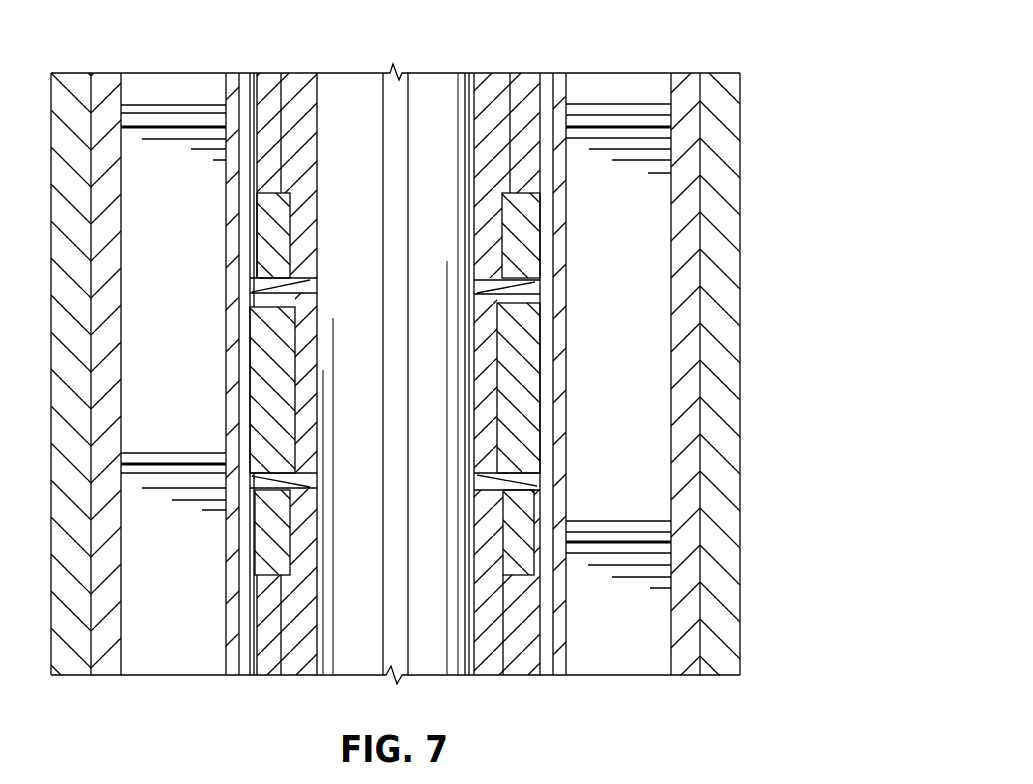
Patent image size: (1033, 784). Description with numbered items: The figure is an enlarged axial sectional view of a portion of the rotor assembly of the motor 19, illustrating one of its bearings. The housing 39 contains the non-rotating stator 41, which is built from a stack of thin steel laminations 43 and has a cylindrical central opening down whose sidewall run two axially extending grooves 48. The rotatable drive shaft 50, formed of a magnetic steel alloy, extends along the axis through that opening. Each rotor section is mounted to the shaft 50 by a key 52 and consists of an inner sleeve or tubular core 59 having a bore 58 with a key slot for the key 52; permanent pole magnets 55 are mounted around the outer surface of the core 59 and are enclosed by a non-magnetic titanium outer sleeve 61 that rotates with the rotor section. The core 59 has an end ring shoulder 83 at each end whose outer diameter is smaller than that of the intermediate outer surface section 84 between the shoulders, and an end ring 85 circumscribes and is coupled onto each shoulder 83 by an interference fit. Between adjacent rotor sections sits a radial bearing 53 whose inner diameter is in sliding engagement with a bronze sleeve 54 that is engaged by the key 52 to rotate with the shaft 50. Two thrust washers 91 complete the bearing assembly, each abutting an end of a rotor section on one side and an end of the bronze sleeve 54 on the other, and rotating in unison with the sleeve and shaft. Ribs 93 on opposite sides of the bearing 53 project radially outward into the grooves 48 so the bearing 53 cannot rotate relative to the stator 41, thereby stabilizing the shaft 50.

The motor 19 is at (760, 536).
The housing 39 is at (730, 590).
The stator 41 is at (704, 213).
The laminations 43 is at (612, 104).
The grooves 48 is at (245, 542).
The drive shaft 50 is at (348, 97).
The key 52 is at (397, 233).
The radial bearing 53 is at (512, 398).
The bronze sleeve 54 is at (490, 430).
The pole magnets 55 is at (267, 160).
The bore 58 is at (473, 532).
The core 59 is at (312, 150).
The outer sleeve 61 is at (250, 193).
The end ring shoulder 83 is at (282, 248).
The intermediate outer surface section 84 is at (275, 593).
The end ring 85 is at (272, 235).
The thrust washer 91 is at (540, 288).
The ribs 93 is at (245, 327).